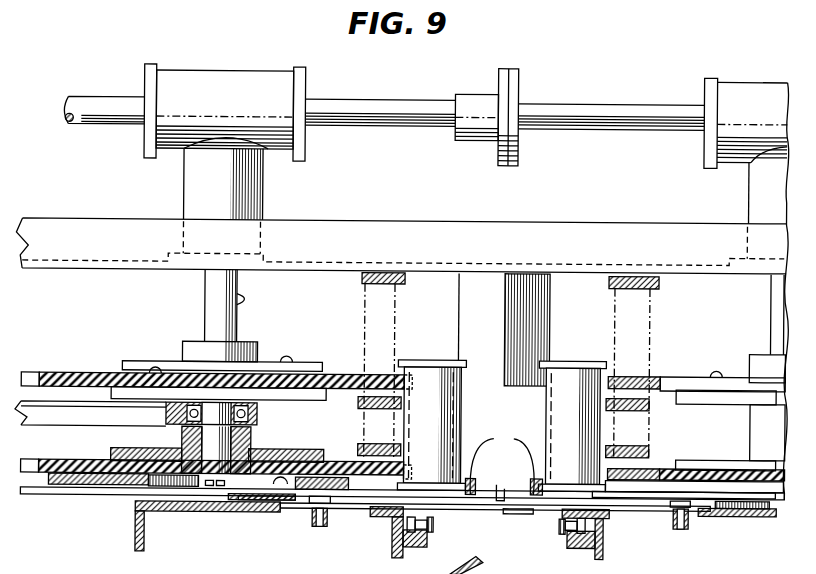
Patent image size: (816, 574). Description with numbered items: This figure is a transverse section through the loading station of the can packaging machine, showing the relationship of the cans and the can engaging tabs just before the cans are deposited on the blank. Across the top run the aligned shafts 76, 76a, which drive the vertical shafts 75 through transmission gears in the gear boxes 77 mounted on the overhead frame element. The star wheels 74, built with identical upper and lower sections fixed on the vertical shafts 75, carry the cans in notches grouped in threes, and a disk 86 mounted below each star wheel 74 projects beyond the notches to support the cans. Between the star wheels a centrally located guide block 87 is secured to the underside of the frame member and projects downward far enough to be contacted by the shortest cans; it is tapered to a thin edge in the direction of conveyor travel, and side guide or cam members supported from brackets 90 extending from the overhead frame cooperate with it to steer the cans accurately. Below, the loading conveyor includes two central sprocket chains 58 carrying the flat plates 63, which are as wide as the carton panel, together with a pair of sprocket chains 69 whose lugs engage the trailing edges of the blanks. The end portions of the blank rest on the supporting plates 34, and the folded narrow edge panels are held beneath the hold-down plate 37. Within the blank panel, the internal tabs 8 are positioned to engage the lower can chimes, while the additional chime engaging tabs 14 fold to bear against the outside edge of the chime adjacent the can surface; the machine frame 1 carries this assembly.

The gear boxes 77 is at (210, 98).
The aligned shaft 76 is at (382, 115).
The aligned shaft 76a is at (605, 112).
The brackets 90 is at (375, 285).
The vertical shafts 75 is at (214, 299).
The guide block 87 is at (527, 316).
The star wheels 74 is at (92, 372).
The internal tabs 8 is at (504, 460).
The chime engaging tabs 14 is at (505, 498).
The disk 86 is at (40, 497).
The supporting plates 34 is at (210, 513).
The hold-down plate 37 is at (290, 502).
The sprocket chains 69 is at (322, 528).
The central sprocket chains 58 is at (440, 525).
The flat plates 63 is at (512, 510).
The frame 1 is at (665, 505).